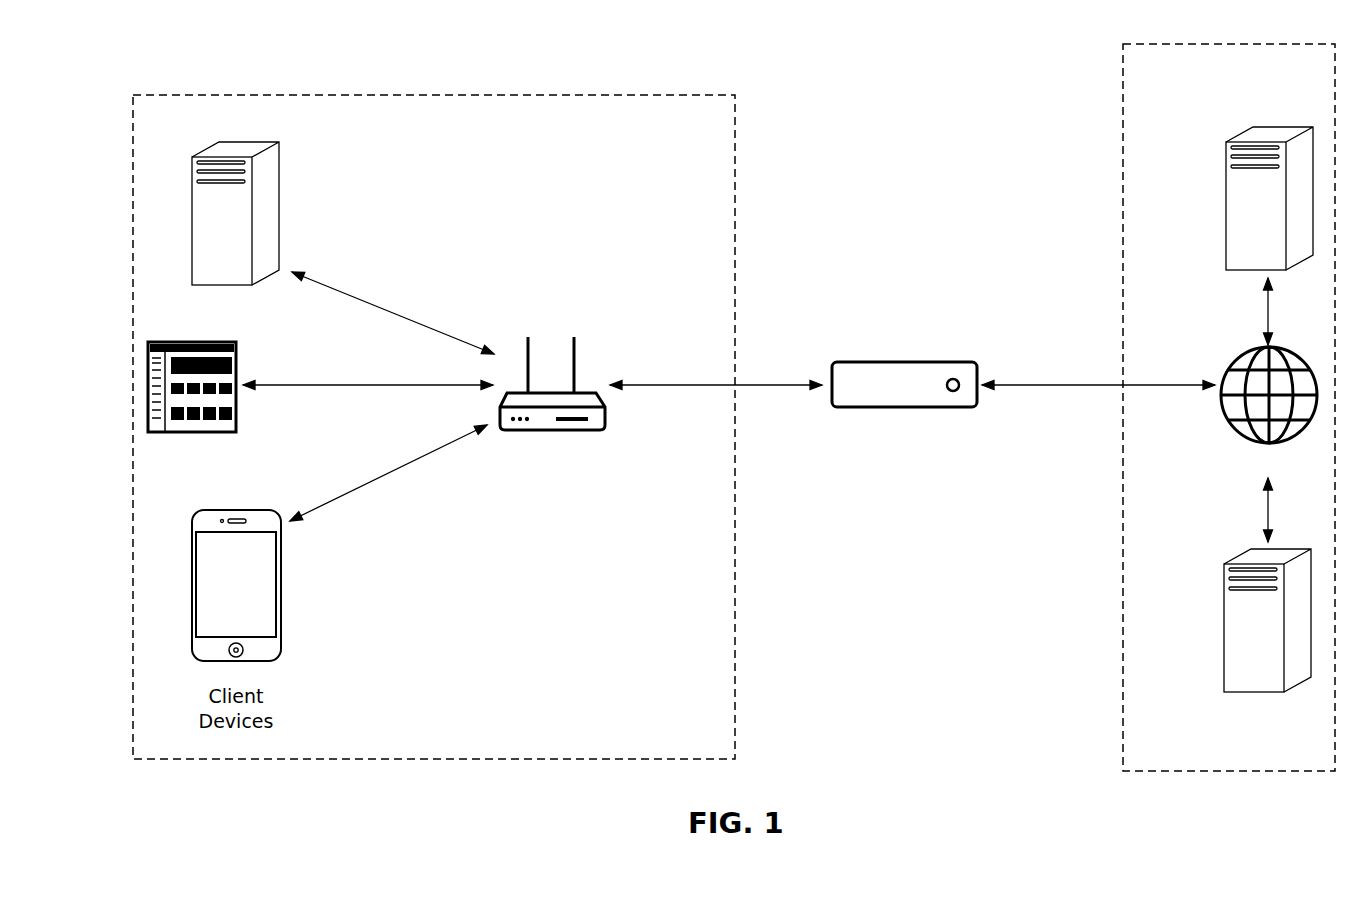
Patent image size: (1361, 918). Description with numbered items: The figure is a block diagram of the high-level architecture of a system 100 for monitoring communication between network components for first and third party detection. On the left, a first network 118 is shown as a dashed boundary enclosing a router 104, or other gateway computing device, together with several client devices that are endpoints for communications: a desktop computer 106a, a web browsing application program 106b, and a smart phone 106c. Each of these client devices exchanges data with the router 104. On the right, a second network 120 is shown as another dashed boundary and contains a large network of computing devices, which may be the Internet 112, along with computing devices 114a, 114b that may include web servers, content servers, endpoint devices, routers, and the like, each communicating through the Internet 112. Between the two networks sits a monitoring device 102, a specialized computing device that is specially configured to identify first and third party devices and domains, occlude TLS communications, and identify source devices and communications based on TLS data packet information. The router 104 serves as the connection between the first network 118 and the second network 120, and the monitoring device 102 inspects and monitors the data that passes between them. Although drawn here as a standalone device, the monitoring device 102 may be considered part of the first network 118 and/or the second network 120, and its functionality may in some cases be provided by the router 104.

The system 100 is at (189, 55).
The monitoring device 102 is at (930, 362).
The router 104 is at (606, 427).
The desktop computer 106a is at (281, 181).
The web browsing application program 106b is at (237, 357).
The smart phone 106c is at (280, 581).
The Internet 112 is at (1233, 358).
The computing device 114a is at (1224, 176).
The computing device 114b is at (1222, 600).
The first network 118 is at (735, 142).
The second network 120 is at (1122, 114).